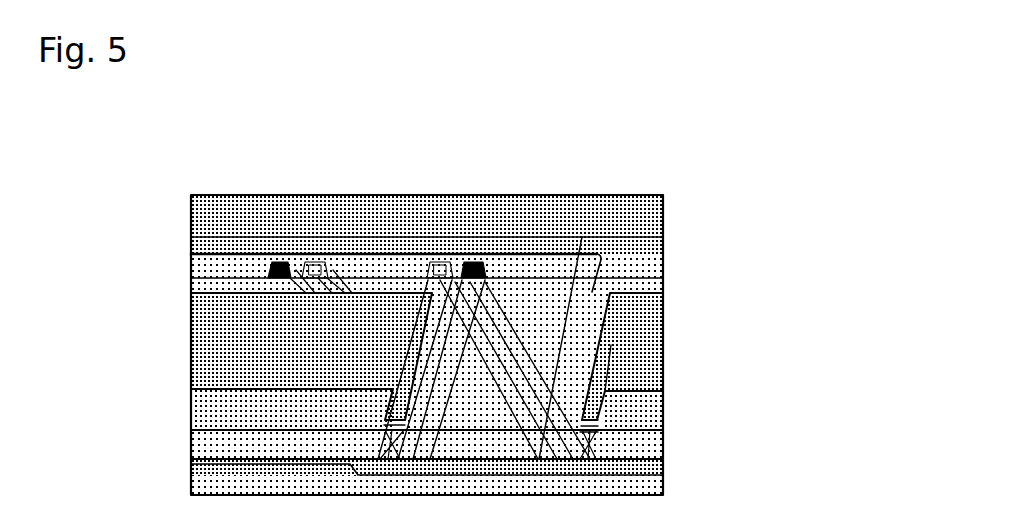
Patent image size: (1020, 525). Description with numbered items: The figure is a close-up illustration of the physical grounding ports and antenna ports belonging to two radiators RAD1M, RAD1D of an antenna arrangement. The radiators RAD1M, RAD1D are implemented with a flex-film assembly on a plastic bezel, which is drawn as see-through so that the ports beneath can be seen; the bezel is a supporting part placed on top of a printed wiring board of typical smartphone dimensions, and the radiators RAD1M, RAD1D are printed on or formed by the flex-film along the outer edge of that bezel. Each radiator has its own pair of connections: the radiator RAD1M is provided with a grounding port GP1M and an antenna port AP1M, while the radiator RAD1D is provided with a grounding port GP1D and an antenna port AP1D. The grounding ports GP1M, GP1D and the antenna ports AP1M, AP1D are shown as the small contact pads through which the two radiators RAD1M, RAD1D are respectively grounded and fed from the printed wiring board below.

The antenna port AP1M is at (284, 262).
The grounding port GP1M is at (322, 262).
The grounding port GP1D is at (433, 262).
The antenna port AP1D is at (477, 262).
The radiator RAD1M is at (190, 341).
The radiator RAD1D is at (663, 362).